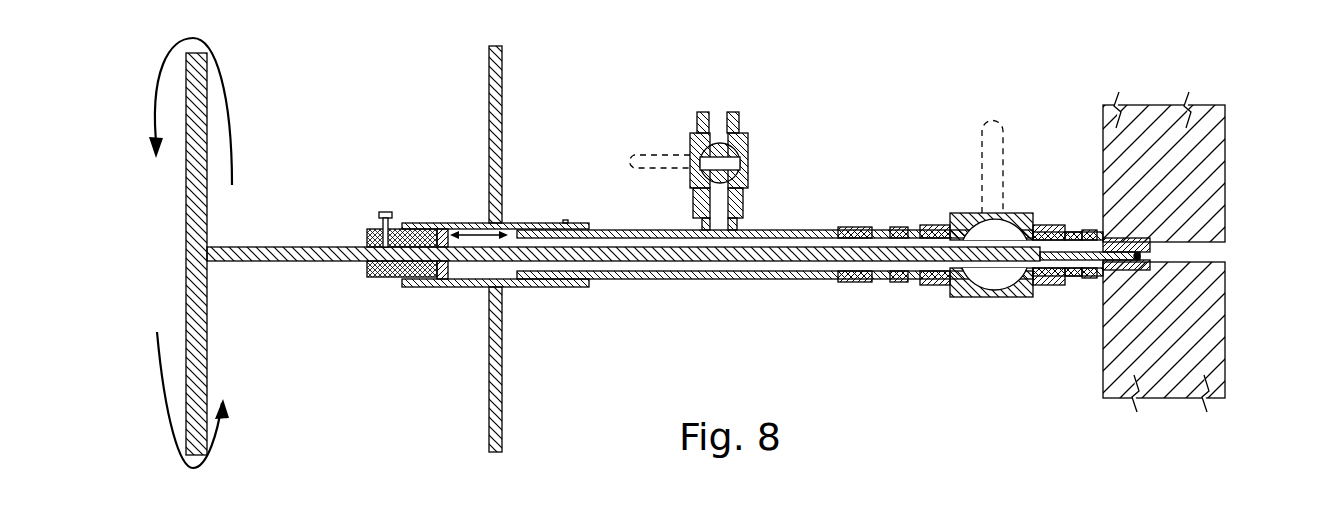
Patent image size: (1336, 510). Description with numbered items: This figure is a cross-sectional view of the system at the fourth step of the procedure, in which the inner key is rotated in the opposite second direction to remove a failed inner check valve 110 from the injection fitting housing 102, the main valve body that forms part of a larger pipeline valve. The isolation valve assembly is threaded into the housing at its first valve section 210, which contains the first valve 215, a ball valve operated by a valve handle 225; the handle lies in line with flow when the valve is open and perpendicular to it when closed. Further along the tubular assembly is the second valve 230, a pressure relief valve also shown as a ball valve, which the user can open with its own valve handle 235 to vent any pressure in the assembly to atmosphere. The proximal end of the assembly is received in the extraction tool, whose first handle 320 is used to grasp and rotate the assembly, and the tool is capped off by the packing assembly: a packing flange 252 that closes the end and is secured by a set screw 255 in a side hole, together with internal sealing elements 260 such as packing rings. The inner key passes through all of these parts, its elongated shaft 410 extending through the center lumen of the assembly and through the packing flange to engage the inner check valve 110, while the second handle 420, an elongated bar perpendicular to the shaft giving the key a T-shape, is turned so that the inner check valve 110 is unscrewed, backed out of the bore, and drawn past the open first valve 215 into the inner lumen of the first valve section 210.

The injection fitting housing 102 is at (1226, 178).
The inner check valve 110 is at (1100, 268).
The first valve section 210 is at (963, 298).
The first valve 215 is at (975, 216).
The valve handle 225 is at (995, 117).
The second valve 230 is at (719, 143).
The valve handle 235 is at (650, 153).
The packing flange 252 is at (392, 278).
The set screw 255 is at (386, 211).
The internal sealing elements 260 is at (446, 230).
The first handle 320 is at (489, 80).
The elongated shaft 410 is at (683, 280).
The second handle 420 is at (186, 246).